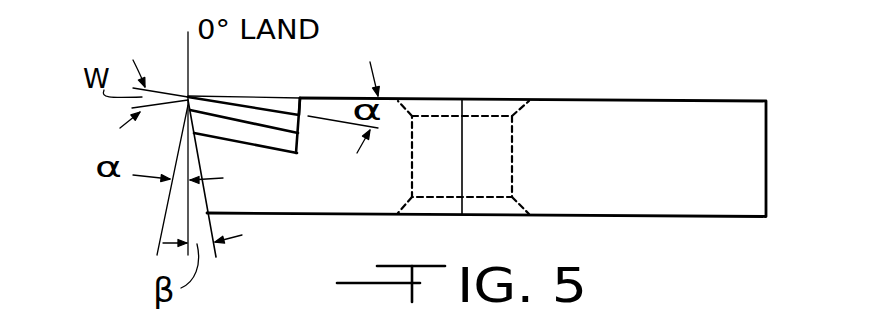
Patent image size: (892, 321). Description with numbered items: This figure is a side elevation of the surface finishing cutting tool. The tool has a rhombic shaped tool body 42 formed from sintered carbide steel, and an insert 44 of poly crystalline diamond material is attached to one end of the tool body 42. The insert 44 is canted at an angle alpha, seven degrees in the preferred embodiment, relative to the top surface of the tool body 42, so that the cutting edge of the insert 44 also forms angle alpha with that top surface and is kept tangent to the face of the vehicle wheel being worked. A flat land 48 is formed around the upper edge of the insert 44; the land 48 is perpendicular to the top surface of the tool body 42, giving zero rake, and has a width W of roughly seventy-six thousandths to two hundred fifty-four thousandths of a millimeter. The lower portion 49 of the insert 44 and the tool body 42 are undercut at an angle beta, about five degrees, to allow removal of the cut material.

The tool body 42 is at (630, 113).
The insert 44 is at (307, 120).
The flat land 48 is at (243, 115).
The lower portion of the insert 49 is at (253, 135).